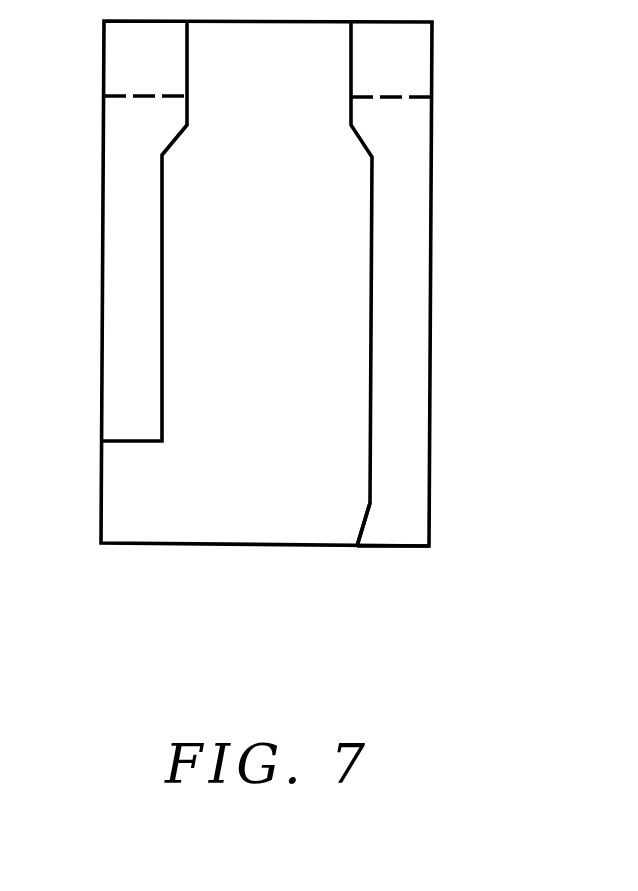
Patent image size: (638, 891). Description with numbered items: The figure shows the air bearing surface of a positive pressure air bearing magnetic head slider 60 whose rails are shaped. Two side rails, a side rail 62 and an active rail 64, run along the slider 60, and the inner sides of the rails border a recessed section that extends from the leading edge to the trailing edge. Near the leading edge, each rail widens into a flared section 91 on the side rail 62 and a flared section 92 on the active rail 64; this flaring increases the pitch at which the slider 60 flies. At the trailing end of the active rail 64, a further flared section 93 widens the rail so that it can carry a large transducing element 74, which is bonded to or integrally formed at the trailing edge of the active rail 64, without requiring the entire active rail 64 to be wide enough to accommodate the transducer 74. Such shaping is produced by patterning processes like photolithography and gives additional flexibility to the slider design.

The magnetic head slider 60 is at (66, 476).
The side rail 62 is at (118, 235).
The active rail 64 is at (414, 222).
The transducer 74 is at (390, 547).
The flared section 91 is at (118, 121).
The flared section 92 is at (403, 122).
The flared section 93 is at (383, 529).